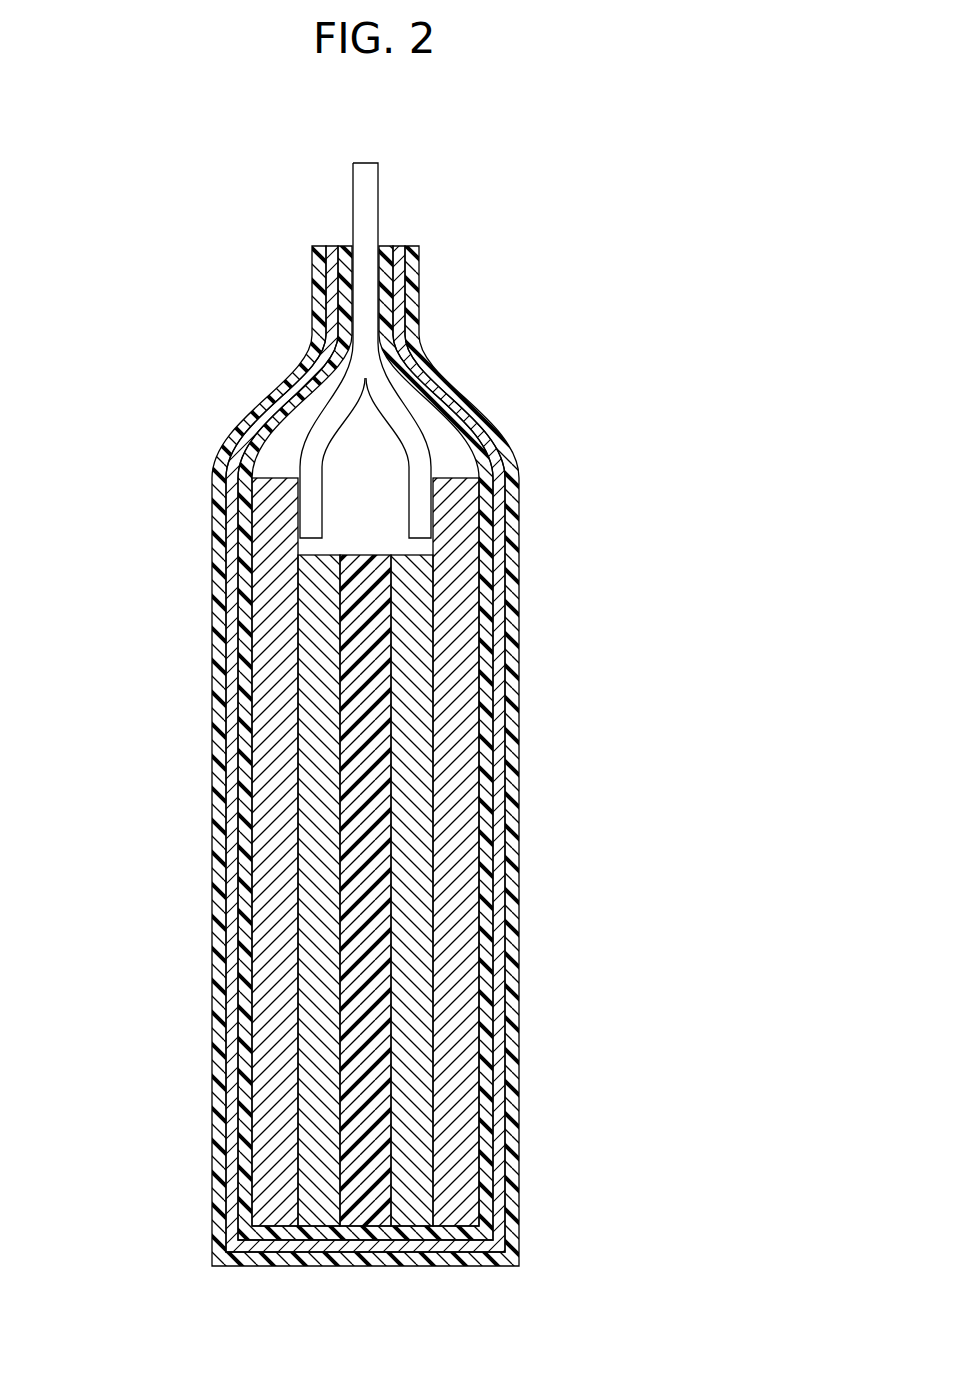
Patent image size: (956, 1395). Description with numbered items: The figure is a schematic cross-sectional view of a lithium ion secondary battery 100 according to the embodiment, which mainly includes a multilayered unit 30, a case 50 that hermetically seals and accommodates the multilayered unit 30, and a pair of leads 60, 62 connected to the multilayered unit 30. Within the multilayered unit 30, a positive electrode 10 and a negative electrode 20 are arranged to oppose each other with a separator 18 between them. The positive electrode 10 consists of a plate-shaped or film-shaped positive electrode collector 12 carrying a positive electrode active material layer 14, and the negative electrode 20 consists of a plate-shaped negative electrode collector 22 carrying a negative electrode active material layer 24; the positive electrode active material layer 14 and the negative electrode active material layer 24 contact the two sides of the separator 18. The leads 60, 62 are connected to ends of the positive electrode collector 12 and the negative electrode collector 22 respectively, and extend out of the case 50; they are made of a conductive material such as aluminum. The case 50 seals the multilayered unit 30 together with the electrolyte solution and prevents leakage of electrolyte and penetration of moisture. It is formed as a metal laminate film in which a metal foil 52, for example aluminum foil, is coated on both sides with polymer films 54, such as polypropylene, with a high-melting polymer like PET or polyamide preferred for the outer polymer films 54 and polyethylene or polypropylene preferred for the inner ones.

The lithium ion secondary battery 100 is at (587, 196).
The positive electrode 10 is at (288, 852).
The positive electrode collector 12 is at (440, 664).
The positive electrode active material layer 14 is at (412, 705).
The separator 18 is at (365, 745).
The negative electrode 20 is at (218, 852).
The negative electrode collector 22 is at (272, 805).
The negative electrode active material layer 24 is at (314, 778).
The multilayered unit 30 is at (262, 852).
The case 50 is at (431, 756).
The metal foil 52 is at (500, 910).
The polymer films 54 is at (485, 878).
The lead 60 is at (340, 396).
The lead 62 is at (388, 396).